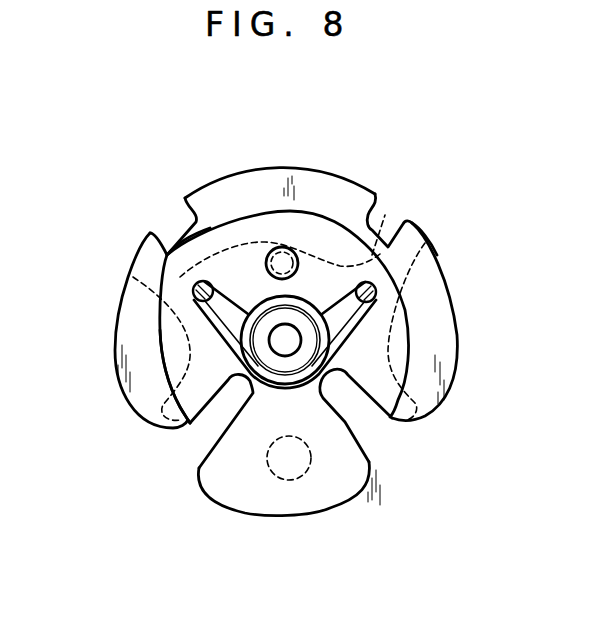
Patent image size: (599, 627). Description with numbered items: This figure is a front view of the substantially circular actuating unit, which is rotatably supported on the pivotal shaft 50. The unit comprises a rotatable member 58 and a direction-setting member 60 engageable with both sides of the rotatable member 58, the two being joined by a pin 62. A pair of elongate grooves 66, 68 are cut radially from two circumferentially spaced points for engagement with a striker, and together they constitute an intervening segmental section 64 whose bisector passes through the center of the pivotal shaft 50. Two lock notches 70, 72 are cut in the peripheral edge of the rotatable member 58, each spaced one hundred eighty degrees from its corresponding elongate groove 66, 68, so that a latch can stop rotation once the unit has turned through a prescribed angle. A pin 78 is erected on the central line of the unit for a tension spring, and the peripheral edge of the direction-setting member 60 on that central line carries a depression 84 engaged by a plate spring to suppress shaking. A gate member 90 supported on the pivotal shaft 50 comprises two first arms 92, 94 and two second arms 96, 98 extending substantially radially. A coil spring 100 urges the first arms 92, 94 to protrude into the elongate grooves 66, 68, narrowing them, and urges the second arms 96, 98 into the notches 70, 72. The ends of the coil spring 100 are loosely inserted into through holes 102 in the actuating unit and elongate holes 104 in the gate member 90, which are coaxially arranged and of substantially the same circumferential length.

The pivotal shaft 50 is at (280, 349).
The rotatable member 58 is at (303, 178).
The direction-setting member 60 is at (157, 347).
The pin 62 is at (291, 470).
The segmental section 64 is at (233, 480).
The elongate groove 66 is at (210, 435).
The elongate groove 68 is at (358, 413).
The lock notch 70 is at (382, 216).
The lock notch 72 is at (176, 222).
The pin 78 is at (264, 250).
The depression 84 is at (297, 245).
The gate member 90 is at (408, 295).
The first arm 92 is at (183, 426).
The first arm 94 is at (395, 419).
The second arm 96 is at (410, 222).
The second arm 98 is at (148, 233).
The coil spring 100 is at (318, 328).
The through hole 102 is at (373, 289).
The elongate hole 104 is at (196, 287).